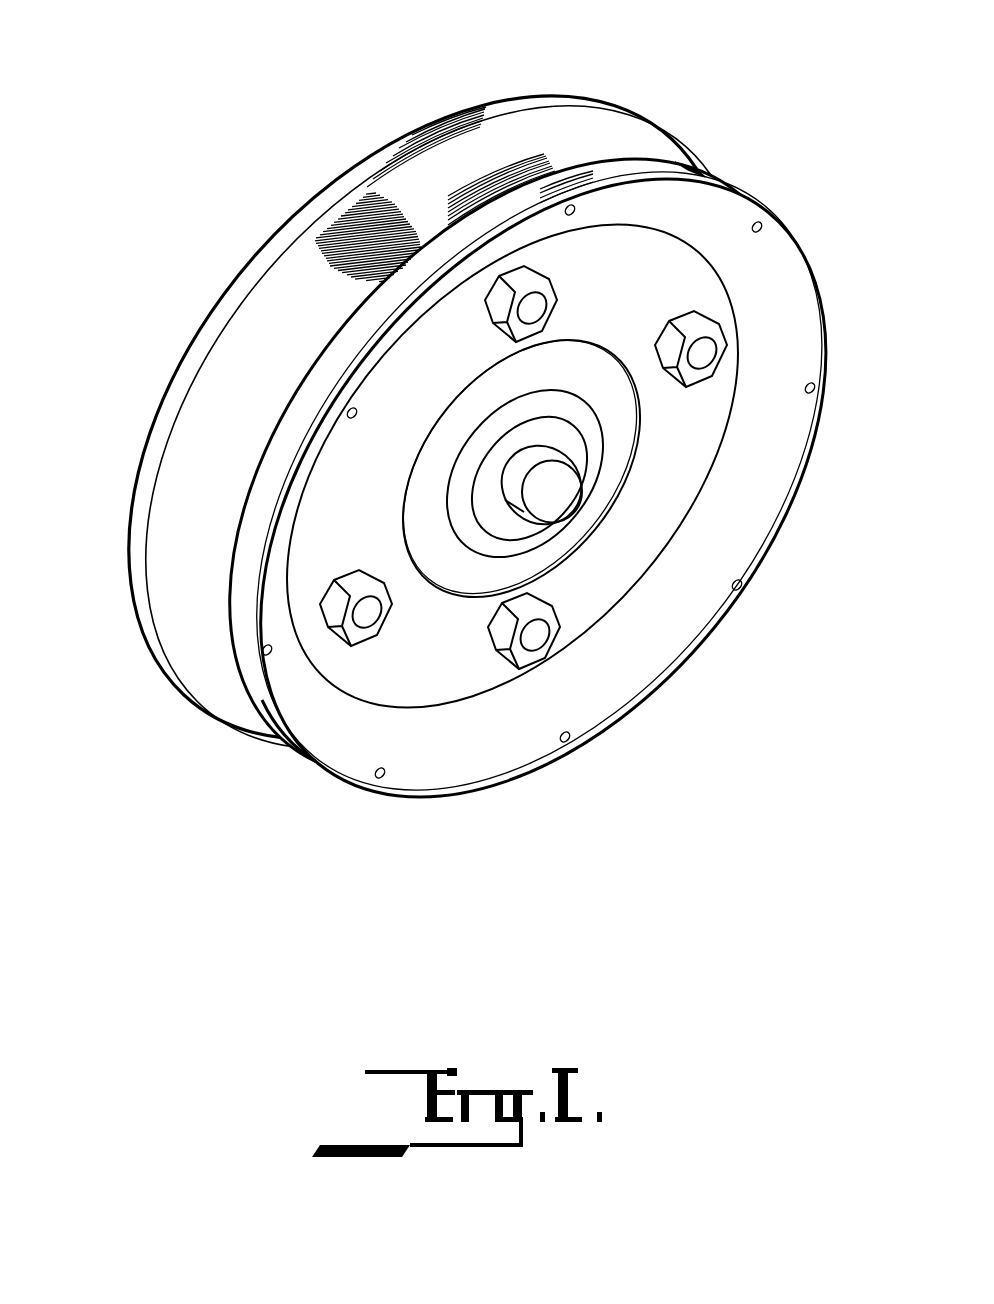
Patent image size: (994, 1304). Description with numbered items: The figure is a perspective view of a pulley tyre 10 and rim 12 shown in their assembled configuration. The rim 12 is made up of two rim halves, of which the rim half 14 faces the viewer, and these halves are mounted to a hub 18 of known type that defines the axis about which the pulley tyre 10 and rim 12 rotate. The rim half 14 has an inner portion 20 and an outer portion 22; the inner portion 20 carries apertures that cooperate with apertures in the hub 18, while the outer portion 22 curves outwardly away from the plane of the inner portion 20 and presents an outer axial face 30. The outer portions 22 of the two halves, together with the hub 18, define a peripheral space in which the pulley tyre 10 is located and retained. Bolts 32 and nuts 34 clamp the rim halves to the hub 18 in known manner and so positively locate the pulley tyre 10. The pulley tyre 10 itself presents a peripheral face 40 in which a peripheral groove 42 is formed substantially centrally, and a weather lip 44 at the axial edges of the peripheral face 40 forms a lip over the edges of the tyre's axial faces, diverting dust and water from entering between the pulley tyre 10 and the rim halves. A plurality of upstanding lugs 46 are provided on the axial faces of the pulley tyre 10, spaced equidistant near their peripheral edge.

The pulley tyre 10 is at (291, 210).
The rim 12 is at (664, 647).
The rim half 14 is at (797, 318).
The hub 18 is at (607, 461).
The inner portion 20 is at (398, 653).
The outer portion 22 is at (382, 741).
The outer axial face 30 is at (272, 585).
The bolt 32 is at (540, 637).
The nut 34 is at (558, 680).
The peripheral face 40 is at (510, 103).
The peripheral groove 42 is at (198, 488).
The weather lip 44 is at (285, 744).
The lug 46 is at (757, 222).